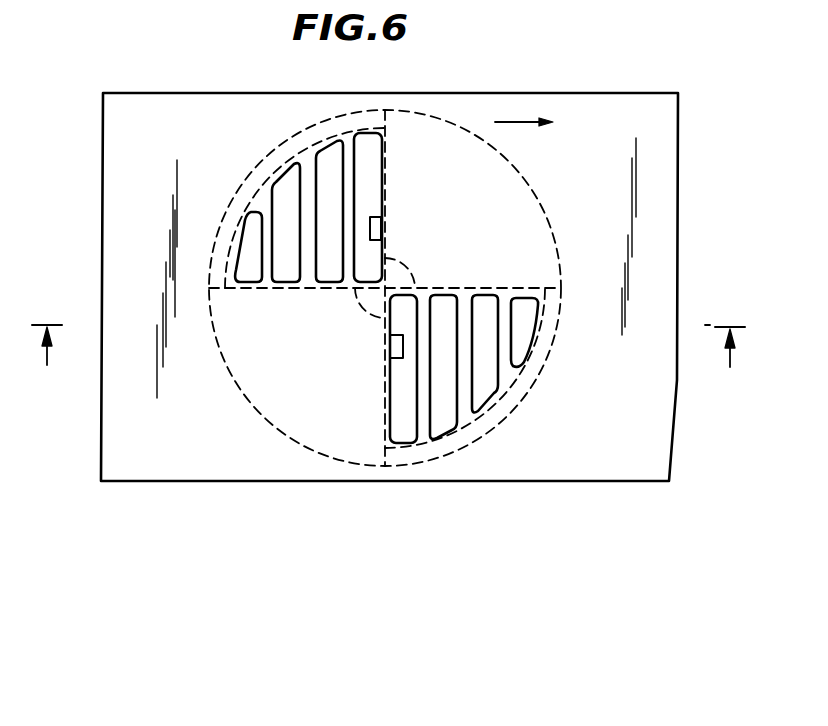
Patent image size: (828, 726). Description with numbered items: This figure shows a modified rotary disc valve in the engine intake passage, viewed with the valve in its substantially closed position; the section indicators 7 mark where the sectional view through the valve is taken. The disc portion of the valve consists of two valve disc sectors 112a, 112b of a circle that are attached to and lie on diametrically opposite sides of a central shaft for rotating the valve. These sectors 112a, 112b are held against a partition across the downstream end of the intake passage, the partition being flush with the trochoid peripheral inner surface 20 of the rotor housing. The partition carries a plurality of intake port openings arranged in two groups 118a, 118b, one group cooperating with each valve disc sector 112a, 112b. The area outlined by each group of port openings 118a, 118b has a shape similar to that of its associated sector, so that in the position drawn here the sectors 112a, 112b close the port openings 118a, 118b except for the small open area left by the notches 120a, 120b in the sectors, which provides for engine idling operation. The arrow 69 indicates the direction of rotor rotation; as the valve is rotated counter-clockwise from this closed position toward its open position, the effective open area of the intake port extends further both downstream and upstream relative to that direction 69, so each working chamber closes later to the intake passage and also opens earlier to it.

The peripheral inner surface 20 is at (670, 167).
The direction of rotor rotation 69 is at (527, 123).
The valve disc sector 112a is at (266, 289).
The valve disc sector 112b is at (518, 377).
The group of intake port openings 118a is at (363, 133).
The group of intake port openings 118b is at (405, 295).
The notch 120a is at (381, 228).
The notch 120b is at (390, 347).
The section line 7- 7 is at (388, 330).